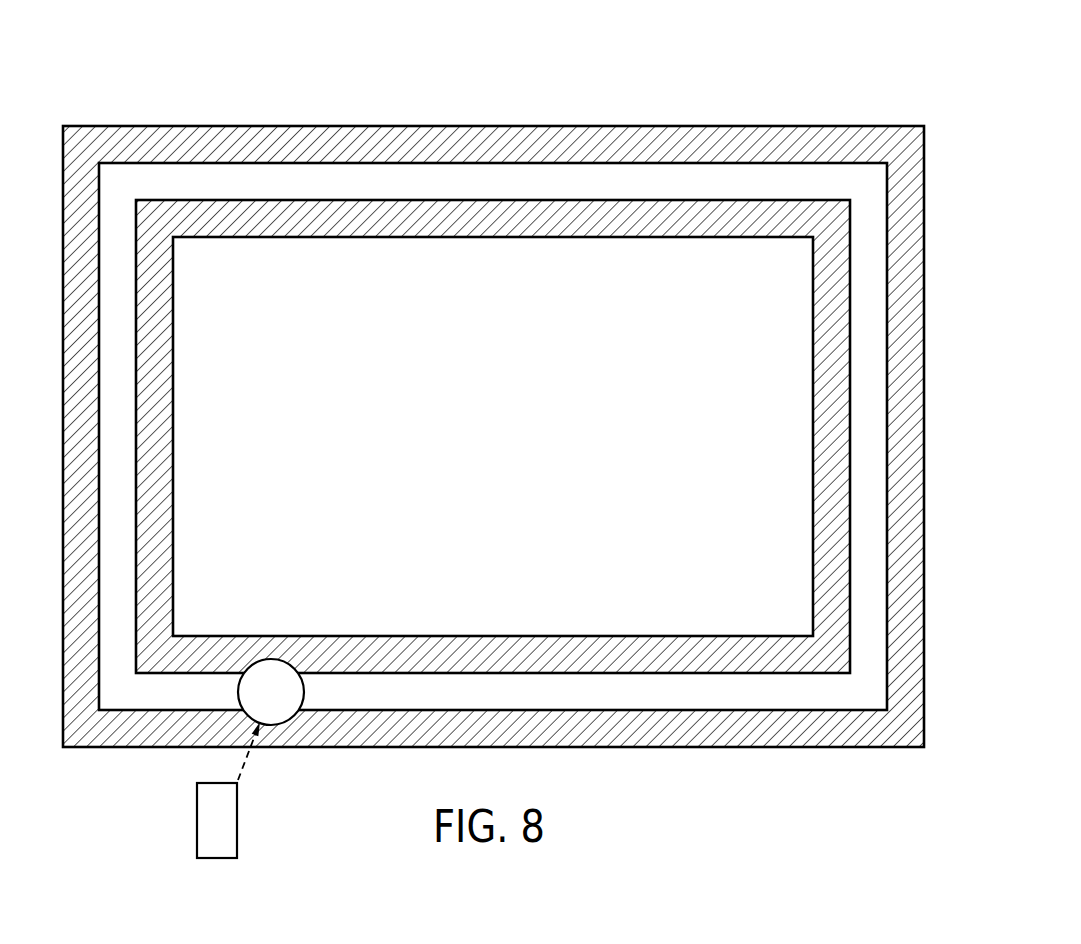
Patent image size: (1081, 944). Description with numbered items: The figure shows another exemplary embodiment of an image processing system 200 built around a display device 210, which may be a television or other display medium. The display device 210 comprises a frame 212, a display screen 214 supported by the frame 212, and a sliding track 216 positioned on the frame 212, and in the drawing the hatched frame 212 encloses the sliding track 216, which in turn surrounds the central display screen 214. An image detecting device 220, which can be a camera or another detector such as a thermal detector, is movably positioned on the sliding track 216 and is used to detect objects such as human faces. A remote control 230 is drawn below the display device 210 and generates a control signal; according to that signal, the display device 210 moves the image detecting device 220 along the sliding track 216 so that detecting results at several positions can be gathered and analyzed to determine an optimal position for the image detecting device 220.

The image processing system 200 is at (934, 97).
The display device 210 is at (522, 127).
The frame 212 is at (473, 156).
The display screen 214 is at (516, 444).
The sliding track 216 is at (729, 194).
The image detecting device 220 is at (293, 706).
The remote control 230 is at (237, 818).